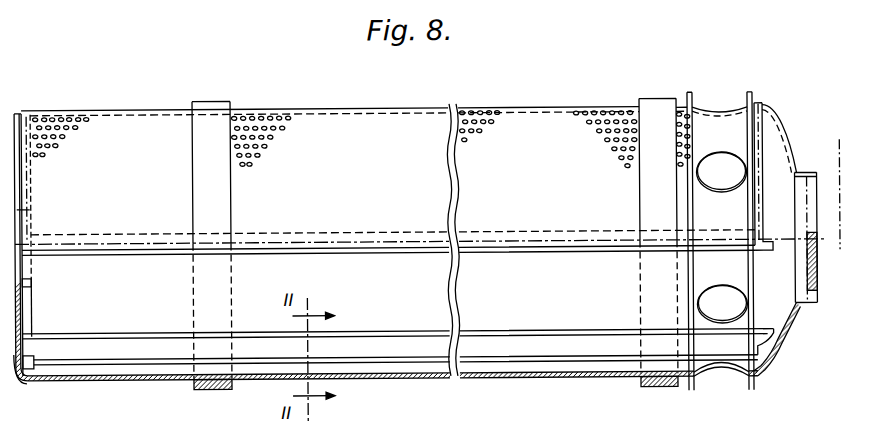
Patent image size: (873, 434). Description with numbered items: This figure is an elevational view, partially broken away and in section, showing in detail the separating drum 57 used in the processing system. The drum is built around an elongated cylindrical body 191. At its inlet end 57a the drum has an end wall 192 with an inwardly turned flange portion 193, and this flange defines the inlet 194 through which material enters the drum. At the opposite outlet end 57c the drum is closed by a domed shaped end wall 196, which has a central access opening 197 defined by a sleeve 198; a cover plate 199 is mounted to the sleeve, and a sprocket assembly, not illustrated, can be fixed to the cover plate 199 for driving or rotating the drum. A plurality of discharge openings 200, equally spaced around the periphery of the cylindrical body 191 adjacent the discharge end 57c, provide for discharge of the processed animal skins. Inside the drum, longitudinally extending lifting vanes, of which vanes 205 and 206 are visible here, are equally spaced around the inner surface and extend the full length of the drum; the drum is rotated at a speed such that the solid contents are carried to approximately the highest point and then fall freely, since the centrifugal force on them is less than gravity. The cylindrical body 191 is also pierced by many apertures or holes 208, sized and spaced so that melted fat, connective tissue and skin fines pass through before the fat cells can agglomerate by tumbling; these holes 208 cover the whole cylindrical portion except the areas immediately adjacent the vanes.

The separating drum 57 is at (538, 90).
The inlet end 57a is at (15, 114).
The outlet end 57c is at (778, 122).
The elongated cylindrical body 191 is at (347, 107).
The end wall 192 is at (20, 379).
The inwardly turned flange portion 193 is at (32, 280).
The inlet 194 is at (30, 212).
The domed shaped end wall 196 is at (776, 349).
The central access opening 197 is at (797, 187).
The sleeve 198 is at (803, 308).
The cover plate 199 is at (815, 218).
The discharge openings 200 is at (706, 107).
The lifting vane 205 is at (497, 340).
The lifting vane 206 is at (387, 250).
The apertures or holes 208 is at (87, 113).